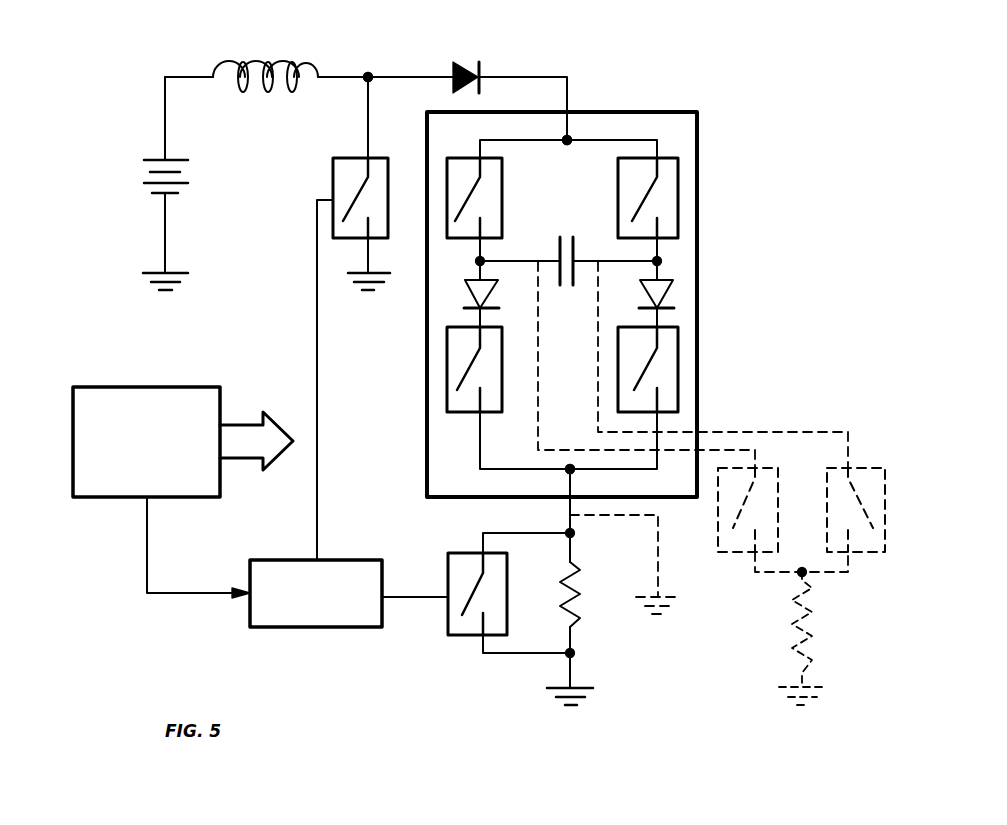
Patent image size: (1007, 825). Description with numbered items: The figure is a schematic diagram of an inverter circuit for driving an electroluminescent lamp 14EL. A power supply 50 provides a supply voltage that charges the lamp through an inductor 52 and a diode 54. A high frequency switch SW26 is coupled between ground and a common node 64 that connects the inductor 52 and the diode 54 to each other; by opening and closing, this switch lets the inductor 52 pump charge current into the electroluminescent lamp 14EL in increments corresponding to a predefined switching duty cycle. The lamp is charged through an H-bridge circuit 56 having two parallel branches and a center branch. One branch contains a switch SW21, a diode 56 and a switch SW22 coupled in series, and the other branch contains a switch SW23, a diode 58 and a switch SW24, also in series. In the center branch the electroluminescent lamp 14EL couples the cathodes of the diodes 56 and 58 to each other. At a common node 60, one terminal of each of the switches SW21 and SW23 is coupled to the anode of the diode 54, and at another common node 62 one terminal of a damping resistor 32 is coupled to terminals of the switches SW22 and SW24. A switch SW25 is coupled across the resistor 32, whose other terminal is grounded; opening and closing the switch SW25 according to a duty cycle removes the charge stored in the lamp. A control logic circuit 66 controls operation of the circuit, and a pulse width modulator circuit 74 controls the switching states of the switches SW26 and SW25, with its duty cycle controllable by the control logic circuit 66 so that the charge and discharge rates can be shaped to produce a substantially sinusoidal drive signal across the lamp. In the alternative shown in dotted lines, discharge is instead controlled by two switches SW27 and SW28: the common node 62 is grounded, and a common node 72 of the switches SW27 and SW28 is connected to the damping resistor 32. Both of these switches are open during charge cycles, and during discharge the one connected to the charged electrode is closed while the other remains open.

The power supply 50 is at (145, 173).
The inductor 52 is at (267, 92).
The diode 54 is at (462, 63).
The H-bridge circuit / diode 56 is at (697, 112).
The diode 58 is at (672, 291).
The common node 60 is at (568, 137).
The common node 62 is at (569, 473).
The common node 64 is at (368, 72).
The control logic circuit 66 is at (148, 387).
The common node 72 is at (800, 578).
The pulse width modulator (PWM) circuit 74 is at (316, 628).
The damping resistor 32 is at (580, 600).
The electroluminescent lamp 14EL is at (565, 286).
The switch SW21 is at (502, 200).
The switch SW22 is at (447, 367).
The switch SW23 is at (678, 200).
The switch SW24 is at (678, 367).
The switch SW25 is at (458, 553).
The high frequency switch SW26 is at (333, 180).
The switch SW27 is at (862, 462).
The switch SW28 is at (771, 462).